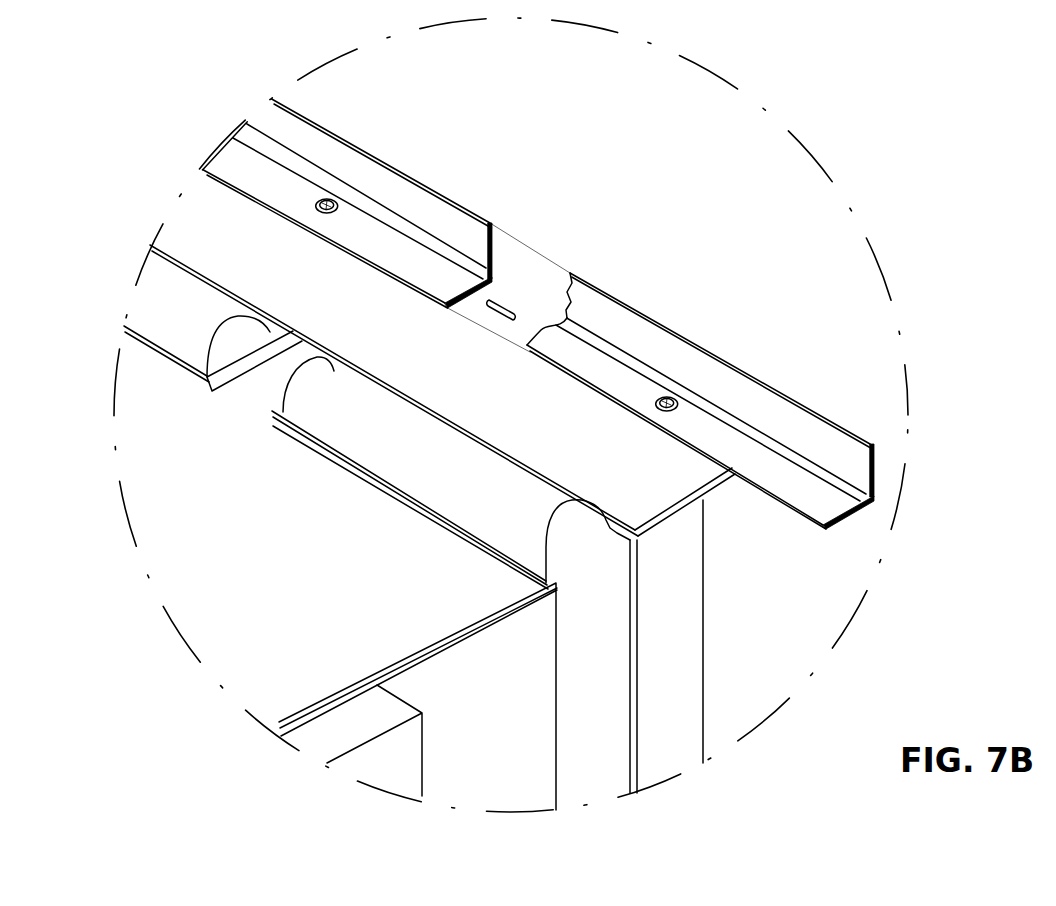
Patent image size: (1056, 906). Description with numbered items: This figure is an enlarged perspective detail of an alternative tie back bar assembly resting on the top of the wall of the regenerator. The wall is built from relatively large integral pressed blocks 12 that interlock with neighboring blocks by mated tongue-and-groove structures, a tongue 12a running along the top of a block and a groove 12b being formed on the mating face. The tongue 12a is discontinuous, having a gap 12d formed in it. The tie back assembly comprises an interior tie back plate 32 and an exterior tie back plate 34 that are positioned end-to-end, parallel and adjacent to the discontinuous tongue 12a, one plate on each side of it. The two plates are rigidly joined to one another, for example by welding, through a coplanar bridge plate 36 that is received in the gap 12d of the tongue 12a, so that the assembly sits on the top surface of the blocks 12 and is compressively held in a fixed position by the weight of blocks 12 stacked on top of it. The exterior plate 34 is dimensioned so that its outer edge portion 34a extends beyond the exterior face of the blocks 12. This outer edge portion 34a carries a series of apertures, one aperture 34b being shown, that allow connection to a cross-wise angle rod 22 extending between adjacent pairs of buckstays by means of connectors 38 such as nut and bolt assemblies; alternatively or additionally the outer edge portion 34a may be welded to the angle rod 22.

The pressed block 12 is at (505, 707).
The tongue 12a is at (207, 317).
The groove 12b is at (622, 722).
The gap 12d is at (247, 320).
The angle rod 22 is at (625, 303).
The interior tie back plate 32 is at (323, 539).
The exterior tie back plate 34 is at (516, 396).
The outer edge portion 34a is at (722, 490).
The aperture 34b is at (503, 303).
The bridge plate 36 is at (285, 370).
The connector 38 is at (333, 200).